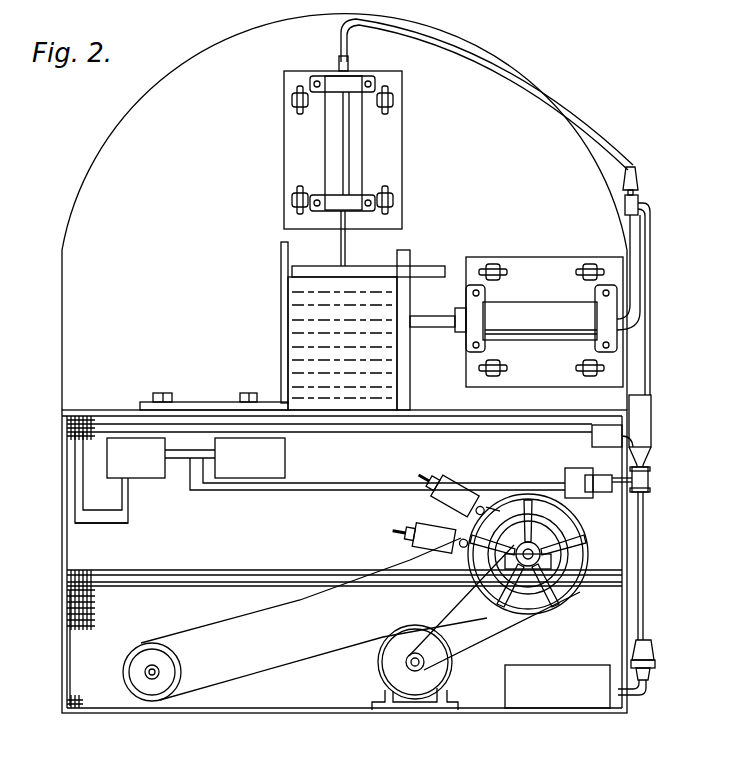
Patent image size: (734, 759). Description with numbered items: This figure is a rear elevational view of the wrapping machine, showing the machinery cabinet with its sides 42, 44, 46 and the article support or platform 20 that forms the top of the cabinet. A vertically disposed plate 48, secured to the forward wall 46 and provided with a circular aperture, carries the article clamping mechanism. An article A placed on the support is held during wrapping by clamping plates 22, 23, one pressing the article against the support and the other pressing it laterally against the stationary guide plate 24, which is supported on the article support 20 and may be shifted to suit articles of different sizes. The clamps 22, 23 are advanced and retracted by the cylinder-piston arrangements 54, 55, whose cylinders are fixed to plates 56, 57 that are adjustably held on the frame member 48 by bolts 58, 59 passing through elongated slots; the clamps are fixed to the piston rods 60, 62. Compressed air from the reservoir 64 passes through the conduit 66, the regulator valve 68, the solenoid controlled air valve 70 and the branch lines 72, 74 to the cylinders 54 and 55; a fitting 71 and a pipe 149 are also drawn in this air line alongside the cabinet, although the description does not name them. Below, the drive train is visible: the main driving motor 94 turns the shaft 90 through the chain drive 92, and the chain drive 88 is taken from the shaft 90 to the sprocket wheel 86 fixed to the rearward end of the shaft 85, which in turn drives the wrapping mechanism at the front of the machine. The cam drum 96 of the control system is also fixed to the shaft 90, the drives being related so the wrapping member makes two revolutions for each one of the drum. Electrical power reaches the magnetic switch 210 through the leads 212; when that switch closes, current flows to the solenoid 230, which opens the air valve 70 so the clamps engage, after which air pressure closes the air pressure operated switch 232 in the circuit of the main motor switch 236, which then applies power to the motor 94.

The platform 20 is at (97, 410).
The clamping plate 22 is at (428, 266).
The clamping plate 23 is at (407, 250).
The stationary guide plate 24 is at (177, 402).
The article A is at (300, 356).
The cabinet side 42 is at (68, 620).
The cabinet side 44 is at (627, 604).
The forward wall 46 is at (80, 467).
The vertically disposed plate 48 is at (76, 270).
The cylinder-piston arrangement 54 is at (331, 135).
The cylinder-piston arrangement 55 is at (528, 295).
The plate 56 is at (390, 149).
The plate 57 is at (524, 248).
The bolts 58 is at (292, 103).
The bolts 59 is at (586, 264).
The piston rod 60 is at (341, 248).
The piston rod 62 is at (435, 321).
The reservoir 64 is at (541, 703).
The conduit 66 is at (648, 689).
The regulator valve 68 is at (654, 653).
The solenoid controlled air valve 70 is at (650, 475).
The valve body 71 is at (652, 418).
The branch line 72 is at (636, 156).
The branch line 74 is at (638, 275).
The shaft 85 is at (150, 673).
The sprocket wheel 86 is at (146, 657).
The chain drive 88 is at (247, 612).
The shaft 90 is at (566, 527).
The chain drive 92 is at (488, 628).
The main driving motor 94 is at (388, 667).
The cam drum 96 is at (566, 585).
The return pipe 149 is at (640, 394).
The magnetic switch 210 is at (154, 472).
The leads 212 is at (97, 524).
The solenoid 230 is at (598, 468).
The air pressure operated switch 232 is at (608, 428).
The main motor switch 236 is at (286, 463).